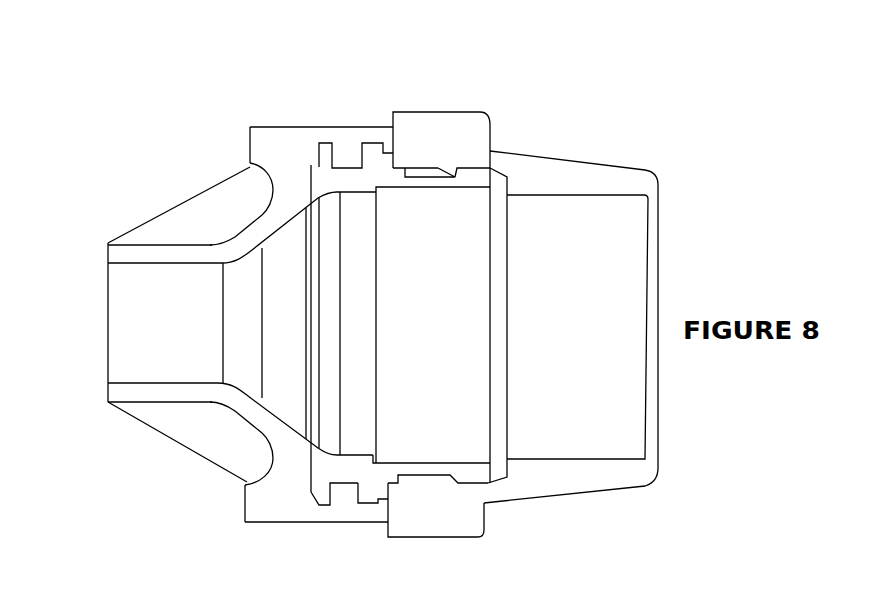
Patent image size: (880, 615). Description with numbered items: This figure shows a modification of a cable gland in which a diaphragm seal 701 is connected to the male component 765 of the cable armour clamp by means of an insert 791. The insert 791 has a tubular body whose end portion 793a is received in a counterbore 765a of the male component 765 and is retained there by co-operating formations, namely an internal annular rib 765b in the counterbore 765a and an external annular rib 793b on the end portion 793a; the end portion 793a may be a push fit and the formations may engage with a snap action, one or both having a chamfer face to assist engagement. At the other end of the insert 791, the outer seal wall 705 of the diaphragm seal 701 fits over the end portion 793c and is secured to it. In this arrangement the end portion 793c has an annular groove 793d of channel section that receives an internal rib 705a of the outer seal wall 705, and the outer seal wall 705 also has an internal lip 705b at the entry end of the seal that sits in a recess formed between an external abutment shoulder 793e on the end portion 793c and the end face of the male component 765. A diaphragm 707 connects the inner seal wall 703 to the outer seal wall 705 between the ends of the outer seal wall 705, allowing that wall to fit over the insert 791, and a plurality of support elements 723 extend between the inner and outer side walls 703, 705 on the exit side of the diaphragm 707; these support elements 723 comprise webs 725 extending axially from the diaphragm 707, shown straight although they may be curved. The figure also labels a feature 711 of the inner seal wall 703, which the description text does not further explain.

The diaphragm seal 701 is at (129, 492).
The inner seal wall 703 is at (118, 253).
The outer seal wall 705 is at (326, 127).
The internal rib 705a is at (349, 503).
The internal lip 705b is at (389, 503).
The diaphragm 707 is at (253, 224).
The opening 711 is at (129, 329).
The support elements 723 is at (163, 225).
The webs 725 is at (207, 448).
The male component 765 is at (602, 162).
The counterbore 765a is at (424, 167).
The internal annular rib 765b is at (452, 170).
The insert 791 is at (318, 165).
The end portion 793a is at (423, 187).
The external annular rib 793b is at (489, 150).
The end portion 793c is at (361, 178).
The annular groove 793d is at (341, 485).
The external abutment shoulder 793e is at (378, 498).